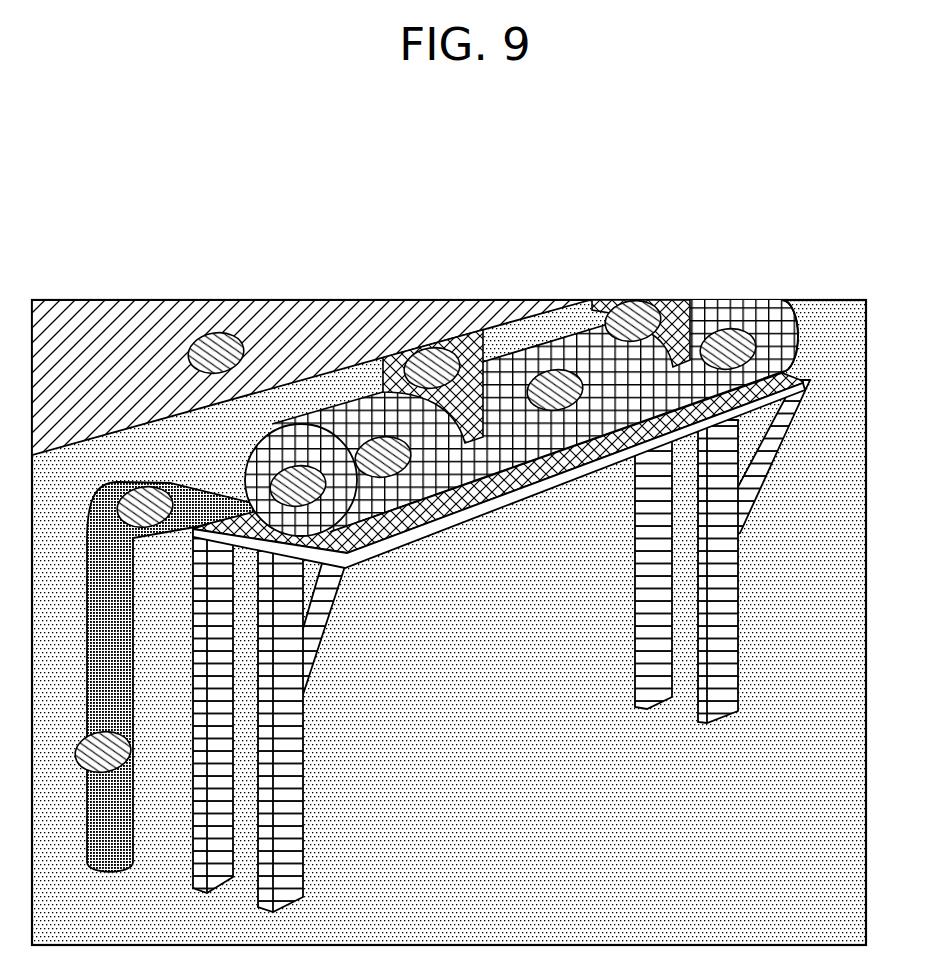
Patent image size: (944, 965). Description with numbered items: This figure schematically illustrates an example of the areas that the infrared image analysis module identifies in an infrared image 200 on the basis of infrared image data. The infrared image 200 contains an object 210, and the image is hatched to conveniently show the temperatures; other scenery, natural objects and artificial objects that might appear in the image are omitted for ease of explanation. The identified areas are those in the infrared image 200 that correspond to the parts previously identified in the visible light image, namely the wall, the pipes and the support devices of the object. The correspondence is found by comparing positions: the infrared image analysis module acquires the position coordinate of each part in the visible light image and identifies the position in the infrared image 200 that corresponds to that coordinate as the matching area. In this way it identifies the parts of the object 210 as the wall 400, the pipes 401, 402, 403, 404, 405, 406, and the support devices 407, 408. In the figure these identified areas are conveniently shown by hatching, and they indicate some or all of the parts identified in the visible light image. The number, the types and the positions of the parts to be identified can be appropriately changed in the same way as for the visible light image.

The infrared image 200 is at (818, 310).
The object 210 is at (731, 329).
The wall 400 is at (217, 334).
The pipe 401 is at (130, 746).
The pipe 402 is at (151, 487).
The pipe 403 is at (257, 443).
The pipe 404 is at (392, 446).
The pipe 405 is at (584, 391).
The pipe 406 is at (756, 346).
The support device 407 is at (432, 348).
The support device 408 is at (632, 301).